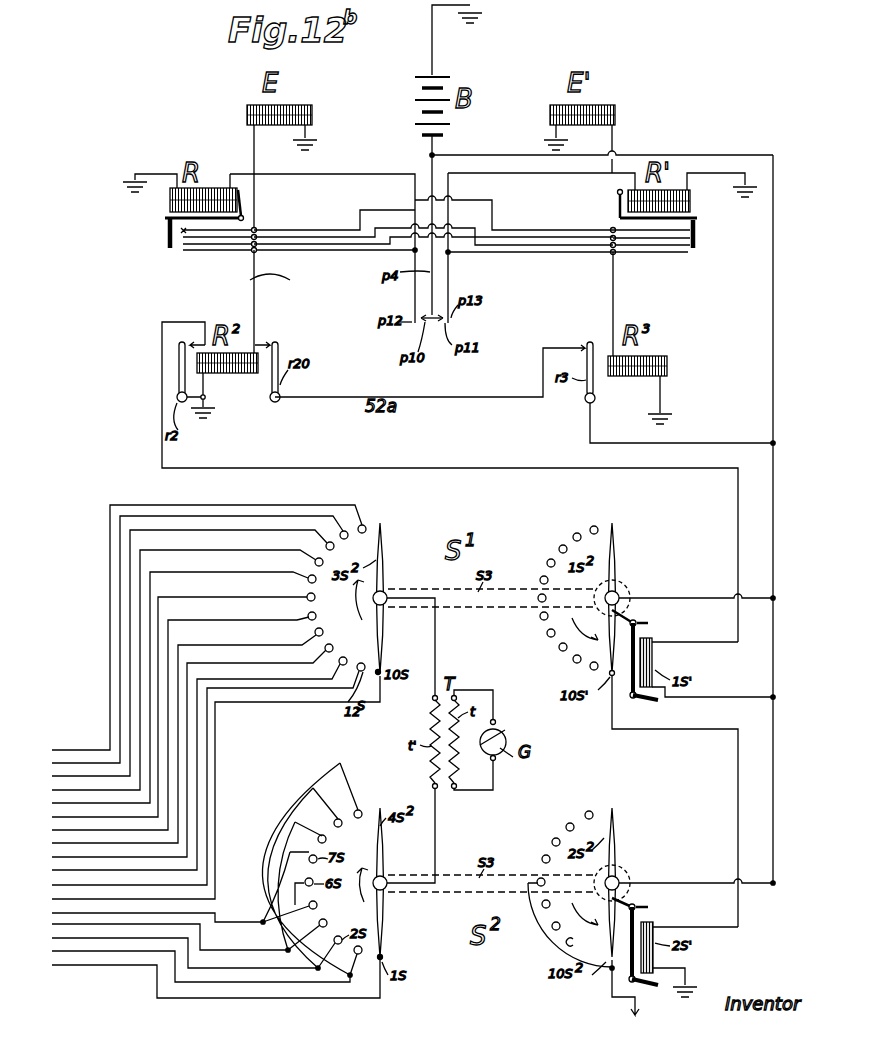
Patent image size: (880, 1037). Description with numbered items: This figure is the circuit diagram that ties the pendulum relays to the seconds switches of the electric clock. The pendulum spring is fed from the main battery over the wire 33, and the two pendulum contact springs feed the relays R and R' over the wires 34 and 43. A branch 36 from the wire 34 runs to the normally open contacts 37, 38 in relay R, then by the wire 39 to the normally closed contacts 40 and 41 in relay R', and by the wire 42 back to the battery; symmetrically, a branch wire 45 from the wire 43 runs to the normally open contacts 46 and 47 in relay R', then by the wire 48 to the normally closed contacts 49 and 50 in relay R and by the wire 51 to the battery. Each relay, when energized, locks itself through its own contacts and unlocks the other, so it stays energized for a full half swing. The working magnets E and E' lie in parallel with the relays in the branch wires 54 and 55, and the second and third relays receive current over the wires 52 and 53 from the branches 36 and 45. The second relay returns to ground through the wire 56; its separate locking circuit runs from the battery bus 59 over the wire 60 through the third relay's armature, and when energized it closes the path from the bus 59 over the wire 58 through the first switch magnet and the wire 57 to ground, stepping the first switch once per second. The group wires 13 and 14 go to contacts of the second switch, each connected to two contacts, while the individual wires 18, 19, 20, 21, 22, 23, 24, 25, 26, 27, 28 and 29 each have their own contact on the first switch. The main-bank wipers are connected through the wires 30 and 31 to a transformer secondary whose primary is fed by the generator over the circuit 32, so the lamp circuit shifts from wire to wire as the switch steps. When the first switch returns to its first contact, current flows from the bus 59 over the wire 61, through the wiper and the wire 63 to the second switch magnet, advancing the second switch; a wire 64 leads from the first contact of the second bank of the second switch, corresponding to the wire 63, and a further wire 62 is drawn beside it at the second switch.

The group wire 13 is at (218, 998).
The group wire 14 is at (233, 984).
The individual wire 18 is at (215, 765).
The individual wire 19 is at (207, 772).
The individual wire 20 is at (197, 797).
The individual wire 21 is at (187, 816).
The individual wire 22 is at (180, 830).
The individual wire 23 is at (158, 828).
The individual wire 24 is at (140, 817).
The individual wire 25 is at (150, 658).
The individual wire 26 is at (140, 678).
The individual wire 27 is at (130, 694).
The individual wire 28 is at (120, 712).
The individual wire 29 is at (110, 732).
The wire 30 is at (437, 652).
The wire 31 is at (435, 832).
The circuit 32 is at (494, 706).
The wire 33 is at (430, 157).
The wire 34 is at (320, 175).
The branch wire 36 is at (312, 251).
The normally open contact 37 is at (182, 252).
The normally open contact 38 is at (168, 247).
The wire 39 is at (287, 246).
The normally closed contact 40 is at (662, 248).
The normally closed contact 41 is at (693, 222).
The wire 42 is at (498, 231).
The wire 43 is at (518, 173).
The branch wire 45 is at (497, 252).
The normally open contact 46 is at (690, 256).
The normally open contact 47 is at (698, 250).
The wire 48 is at (348, 246).
The normally closed contact 49 is at (216, 239).
The normally closed contact 50 is at (238, 232).
The wire 51 is at (310, 232).
The wire 52 is at (255, 318).
The wire 53 is at (615, 307).
The branch wire 54 is at (254, 147).
The branch wire 55 is at (612, 145).
The ground wire 56 is at (206, 390).
The wire 57 is at (160, 366).
The wire 58 is at (736, 697).
The battery wire 59 is at (708, 158).
The wire 60 is at (684, 443).
The wire 61 is at (745, 600).
The conductor 62 is at (736, 893).
The wire 63 is at (700, 729).
The wire 64 is at (610, 988).